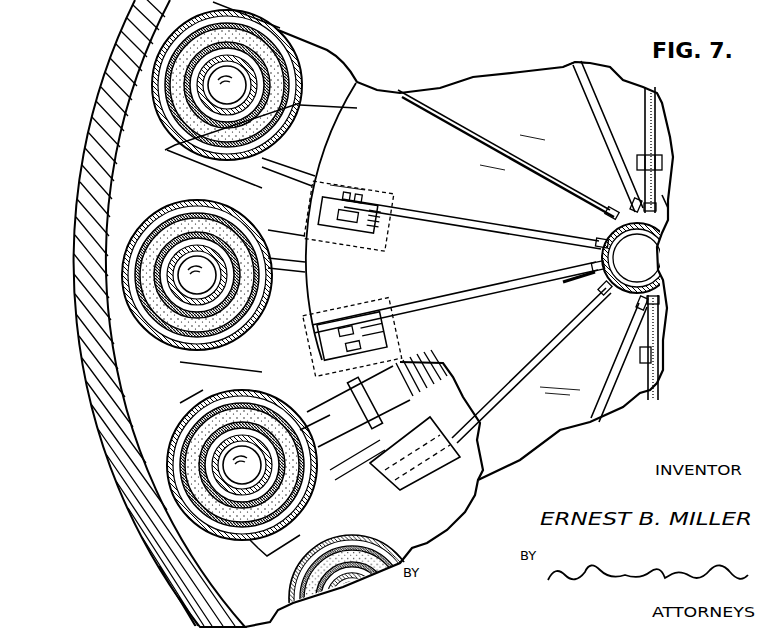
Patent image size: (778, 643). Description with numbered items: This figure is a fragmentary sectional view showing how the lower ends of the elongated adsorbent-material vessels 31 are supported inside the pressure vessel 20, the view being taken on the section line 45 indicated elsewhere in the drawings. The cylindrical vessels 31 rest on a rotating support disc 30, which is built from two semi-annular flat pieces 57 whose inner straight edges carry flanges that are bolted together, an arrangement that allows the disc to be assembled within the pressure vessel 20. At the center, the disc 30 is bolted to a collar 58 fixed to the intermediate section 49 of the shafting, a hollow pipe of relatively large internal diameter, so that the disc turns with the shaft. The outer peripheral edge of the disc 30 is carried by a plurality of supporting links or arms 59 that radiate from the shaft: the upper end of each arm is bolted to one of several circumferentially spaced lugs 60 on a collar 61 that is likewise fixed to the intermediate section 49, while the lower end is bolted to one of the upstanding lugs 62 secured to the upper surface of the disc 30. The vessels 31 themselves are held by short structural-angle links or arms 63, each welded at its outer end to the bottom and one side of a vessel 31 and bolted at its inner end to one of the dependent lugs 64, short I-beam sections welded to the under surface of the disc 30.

The pressure vessel 20 is at (102, 88).
The cylindrical vessels 31 is at (170, 33).
The supporting links or arms 63 is at (225, 170).
The spider plate 45 is at (436, 314).
The support disc 30 is at (576, 51).
The semi-annular flat pieces 57 is at (552, 120).
The collar 58 is at (672, 208).
The intermediate section 49 is at (663, 243).
The collar 61 is at (662, 297).
The lugs 60 is at (585, 284).
The supporting links or arms 59 is at (497, 231).
The upstanding lugs 62 is at (375, 232).
The dependent lugs 64 is at (482, 458).